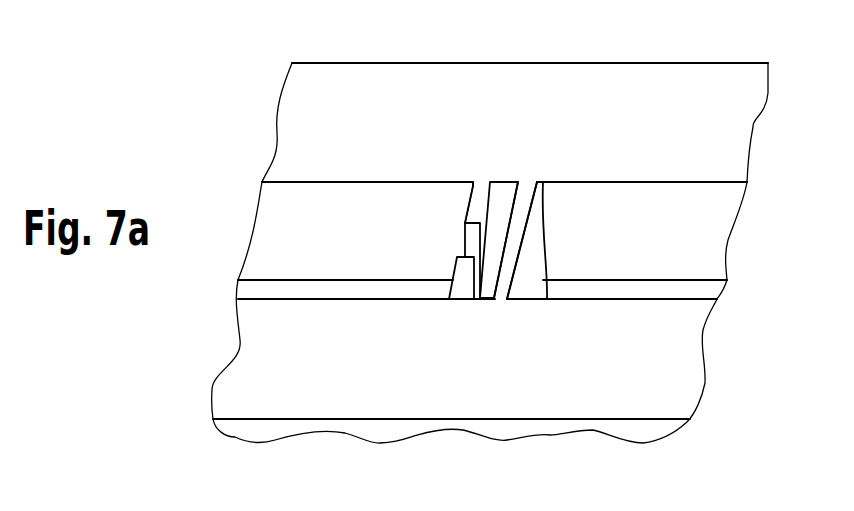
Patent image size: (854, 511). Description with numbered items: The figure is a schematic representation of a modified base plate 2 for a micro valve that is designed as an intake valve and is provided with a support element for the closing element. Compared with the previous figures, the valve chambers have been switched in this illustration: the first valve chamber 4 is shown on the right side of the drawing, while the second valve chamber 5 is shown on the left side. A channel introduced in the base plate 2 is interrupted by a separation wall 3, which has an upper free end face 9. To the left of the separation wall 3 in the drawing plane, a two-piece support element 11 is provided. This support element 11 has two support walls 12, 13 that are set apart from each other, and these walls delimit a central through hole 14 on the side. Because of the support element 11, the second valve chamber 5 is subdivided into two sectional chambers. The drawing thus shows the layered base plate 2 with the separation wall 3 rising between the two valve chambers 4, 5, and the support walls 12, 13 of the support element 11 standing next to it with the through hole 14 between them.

The base plate 2 is at (632, 95).
The separation wall 3 is at (530, 255).
The first valve chamber 4 is at (693, 232).
The second valve chamber 5 is at (288, 269).
The upper free end face 9 is at (520, 206).
The support element 11 is at (474, 213).
The support wall 12 is at (462, 278).
The support wall 13 is at (475, 205).
The central through hole 14 is at (472, 240).